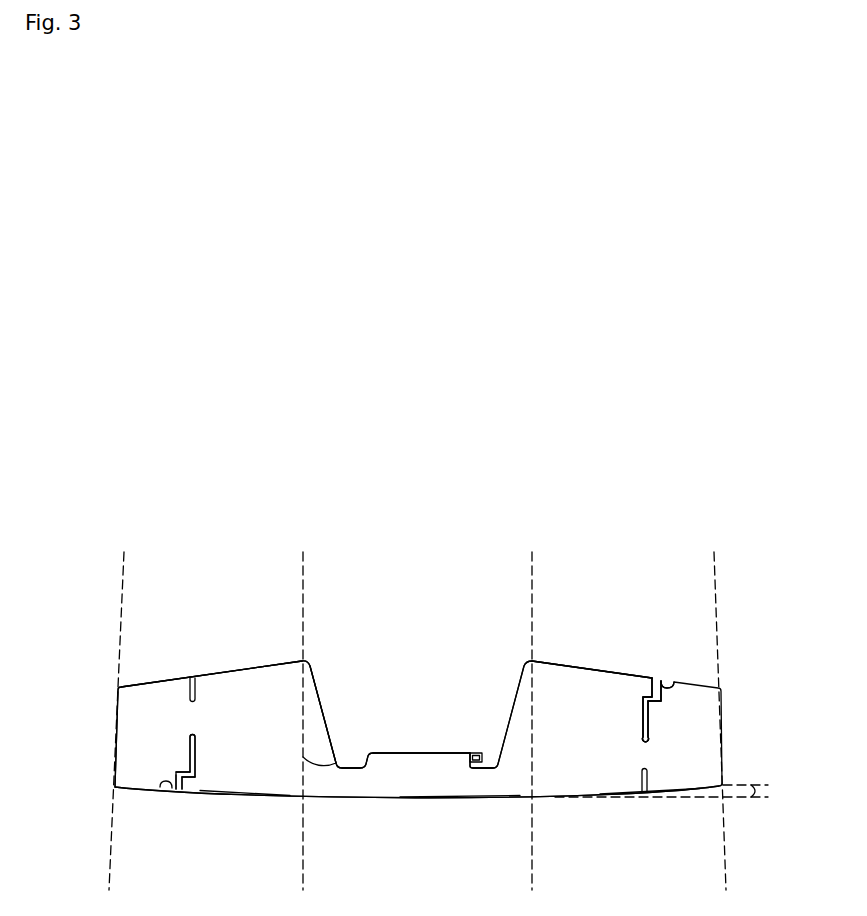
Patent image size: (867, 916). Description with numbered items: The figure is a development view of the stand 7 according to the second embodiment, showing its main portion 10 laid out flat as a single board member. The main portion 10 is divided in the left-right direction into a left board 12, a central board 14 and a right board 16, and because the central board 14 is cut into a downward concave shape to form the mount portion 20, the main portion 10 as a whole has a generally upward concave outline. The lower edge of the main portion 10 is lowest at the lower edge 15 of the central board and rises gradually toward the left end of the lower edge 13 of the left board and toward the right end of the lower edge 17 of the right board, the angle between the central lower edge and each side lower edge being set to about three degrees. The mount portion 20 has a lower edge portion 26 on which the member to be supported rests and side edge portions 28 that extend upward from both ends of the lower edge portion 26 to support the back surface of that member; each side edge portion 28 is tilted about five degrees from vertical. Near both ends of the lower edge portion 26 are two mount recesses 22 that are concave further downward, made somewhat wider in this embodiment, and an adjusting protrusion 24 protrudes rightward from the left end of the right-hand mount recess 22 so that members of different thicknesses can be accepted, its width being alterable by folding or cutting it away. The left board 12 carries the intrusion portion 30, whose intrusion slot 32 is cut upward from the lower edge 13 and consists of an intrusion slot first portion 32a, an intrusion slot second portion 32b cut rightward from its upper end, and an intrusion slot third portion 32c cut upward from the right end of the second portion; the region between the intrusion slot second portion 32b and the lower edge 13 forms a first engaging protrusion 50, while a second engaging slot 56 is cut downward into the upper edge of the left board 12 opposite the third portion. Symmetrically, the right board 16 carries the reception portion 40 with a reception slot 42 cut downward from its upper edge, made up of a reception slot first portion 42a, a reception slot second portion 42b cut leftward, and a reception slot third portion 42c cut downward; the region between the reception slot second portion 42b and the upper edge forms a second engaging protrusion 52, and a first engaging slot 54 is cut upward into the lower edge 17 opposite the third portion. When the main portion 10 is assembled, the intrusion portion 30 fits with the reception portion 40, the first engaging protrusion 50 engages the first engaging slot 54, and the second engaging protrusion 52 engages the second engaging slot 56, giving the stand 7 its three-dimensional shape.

The stand 7 is at (637, 442).
The main portion 10 is at (197, 519).
The left board 12 is at (130, 552).
The central board 14 is at (310, 552).
The right board 16 is at (715, 552).
The lower edge of the left board 13 is at (255, 795).
The lower edge of the central board 15 is at (443, 798).
The lower edge of the right board 17 is at (609, 792).
The mount portion 20 is at (417, 752).
The mount recess 22 is at (348, 765).
The adjusting protrusion 24 is at (476, 753).
The lower edge portion 26 is at (393, 755).
The side edge portion 28 is at (322, 699).
The intrusion portion 30 is at (245, 666).
The intrusion slot 32 is at (263, 858).
The intrusion slot first portion 32a is at (173, 793).
The intrusion slot second portion 32b is at (184, 781).
The intrusion slot third portion 32c is at (199, 755).
The reception portion 40 is at (613, 672).
The reception slot 42 is at (573, 617).
The reception slot first portion 42a is at (666, 675).
The reception slot second portion 42b is at (653, 691).
The reception slot third portion 42c is at (638, 717).
The first engaging protrusion 50 is at (160, 788).
The second engaging protrusion 52 is at (673, 680).
The first engaging slot 54 is at (644, 797).
The second engaging slot 56 is at (193, 677).